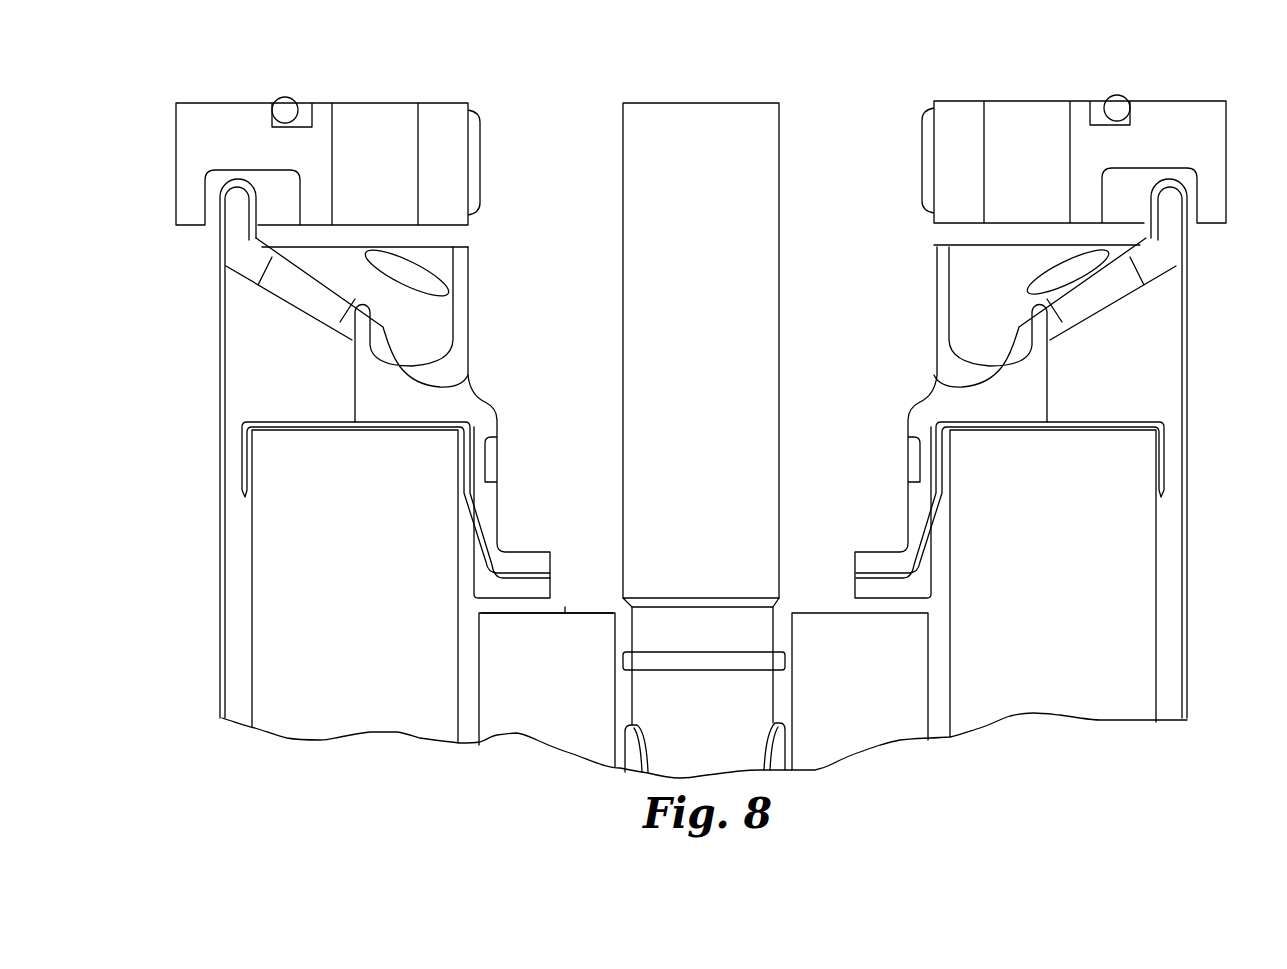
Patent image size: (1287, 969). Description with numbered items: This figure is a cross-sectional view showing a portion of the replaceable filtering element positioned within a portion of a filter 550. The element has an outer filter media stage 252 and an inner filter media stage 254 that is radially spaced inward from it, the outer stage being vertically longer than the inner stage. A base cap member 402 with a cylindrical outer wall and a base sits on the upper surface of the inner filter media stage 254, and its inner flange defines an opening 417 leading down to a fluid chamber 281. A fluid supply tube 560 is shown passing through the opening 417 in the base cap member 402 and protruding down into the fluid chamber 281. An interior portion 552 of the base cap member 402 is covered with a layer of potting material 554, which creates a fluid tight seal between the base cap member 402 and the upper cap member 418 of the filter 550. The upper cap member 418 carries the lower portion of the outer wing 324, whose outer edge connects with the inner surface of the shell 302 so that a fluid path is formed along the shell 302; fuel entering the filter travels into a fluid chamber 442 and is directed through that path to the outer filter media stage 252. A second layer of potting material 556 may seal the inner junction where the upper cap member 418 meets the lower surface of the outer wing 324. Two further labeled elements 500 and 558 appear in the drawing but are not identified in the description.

The filter 550 is at (561, 81).
The fluid supply tube 560 is at (733, 225).
The outer wing 324 is at (1002, 273).
The fluid chamber 442 is at (262, 363).
The second layer of potting material 556 is at (932, 368).
The shell 302 is at (1188, 334).
The upper cap member 418 is at (400, 398).
The interior portion of base cap member 552 is at (500, 575).
The arm cup 558 is at (963, 382).
The opening 417 is at (635, 613).
The outer filter media stage 252 is at (290, 625).
The inner filter media stage 254 is at (520, 668).
The base cap member 402 is at (567, 607).
The potting material 554 is at (880, 578).
The lower block 500 is at (865, 600).
The fluid chamber 281 is at (667, 750).